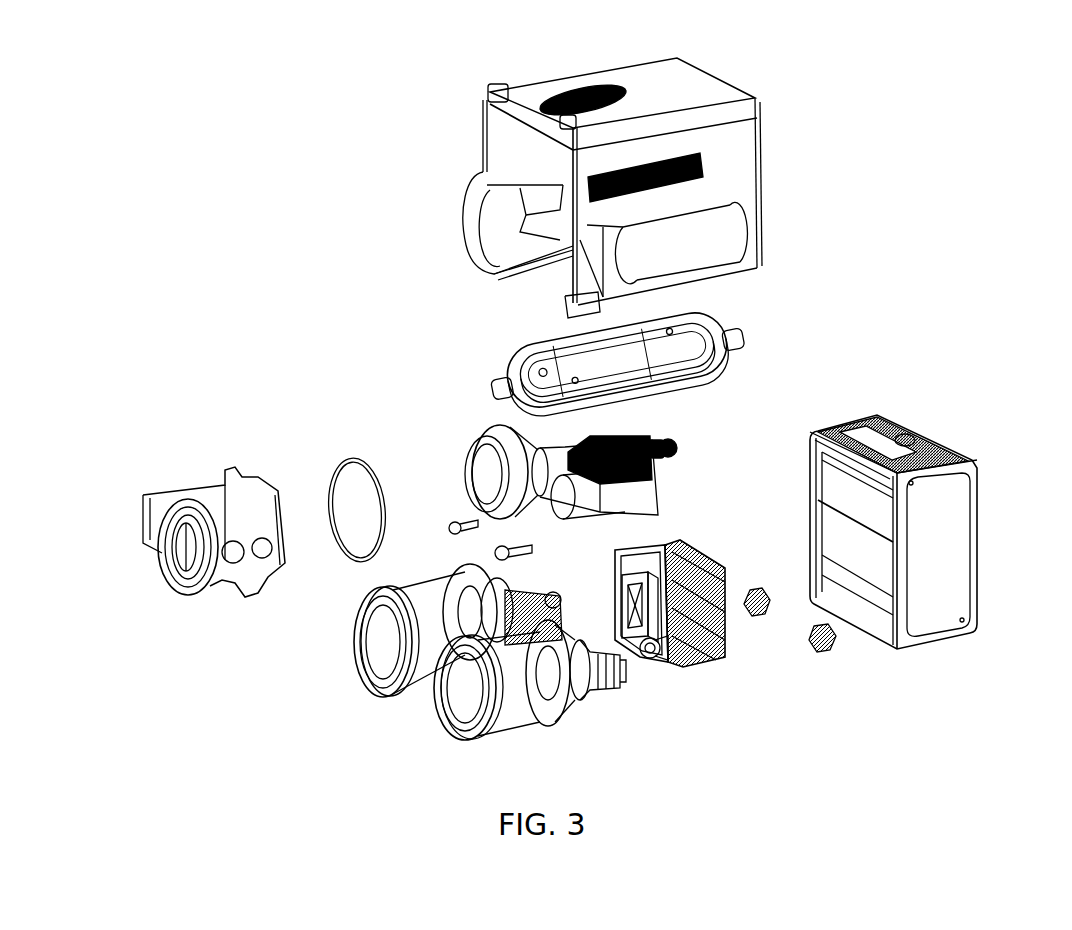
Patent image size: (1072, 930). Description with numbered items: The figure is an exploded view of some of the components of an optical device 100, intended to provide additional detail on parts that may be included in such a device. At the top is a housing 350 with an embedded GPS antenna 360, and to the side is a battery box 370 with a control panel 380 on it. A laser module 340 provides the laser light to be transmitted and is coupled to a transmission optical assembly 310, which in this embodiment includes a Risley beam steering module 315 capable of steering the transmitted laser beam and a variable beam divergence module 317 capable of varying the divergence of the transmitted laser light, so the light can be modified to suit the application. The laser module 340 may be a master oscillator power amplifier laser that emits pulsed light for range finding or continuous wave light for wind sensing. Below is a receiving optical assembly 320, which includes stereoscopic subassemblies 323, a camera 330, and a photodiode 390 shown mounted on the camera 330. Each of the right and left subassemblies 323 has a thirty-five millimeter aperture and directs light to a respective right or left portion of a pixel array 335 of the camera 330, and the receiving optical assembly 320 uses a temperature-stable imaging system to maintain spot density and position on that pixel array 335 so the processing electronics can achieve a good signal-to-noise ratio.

The optical device 100 is at (1002, 124).
The transmission optical assembly 310 is at (659, 420).
The Risley beam steering module 315 is at (201, 577).
The variable beam divergence module 317 is at (633, 458).
The receiving optical assembly 320 is at (717, 740).
The stereoscopic subassemblies 323 is at (464, 675).
The camera 330 is at (725, 643).
The pixel array 335 is at (603, 592).
The laser module 340 is at (659, 361).
The housing 350 is at (662, 188).
The GPS antenna 360 is at (593, 76).
The battery box 370 is at (941, 532).
The control panel 380 is at (941, 440).
The photodiode 390 is at (666, 682).